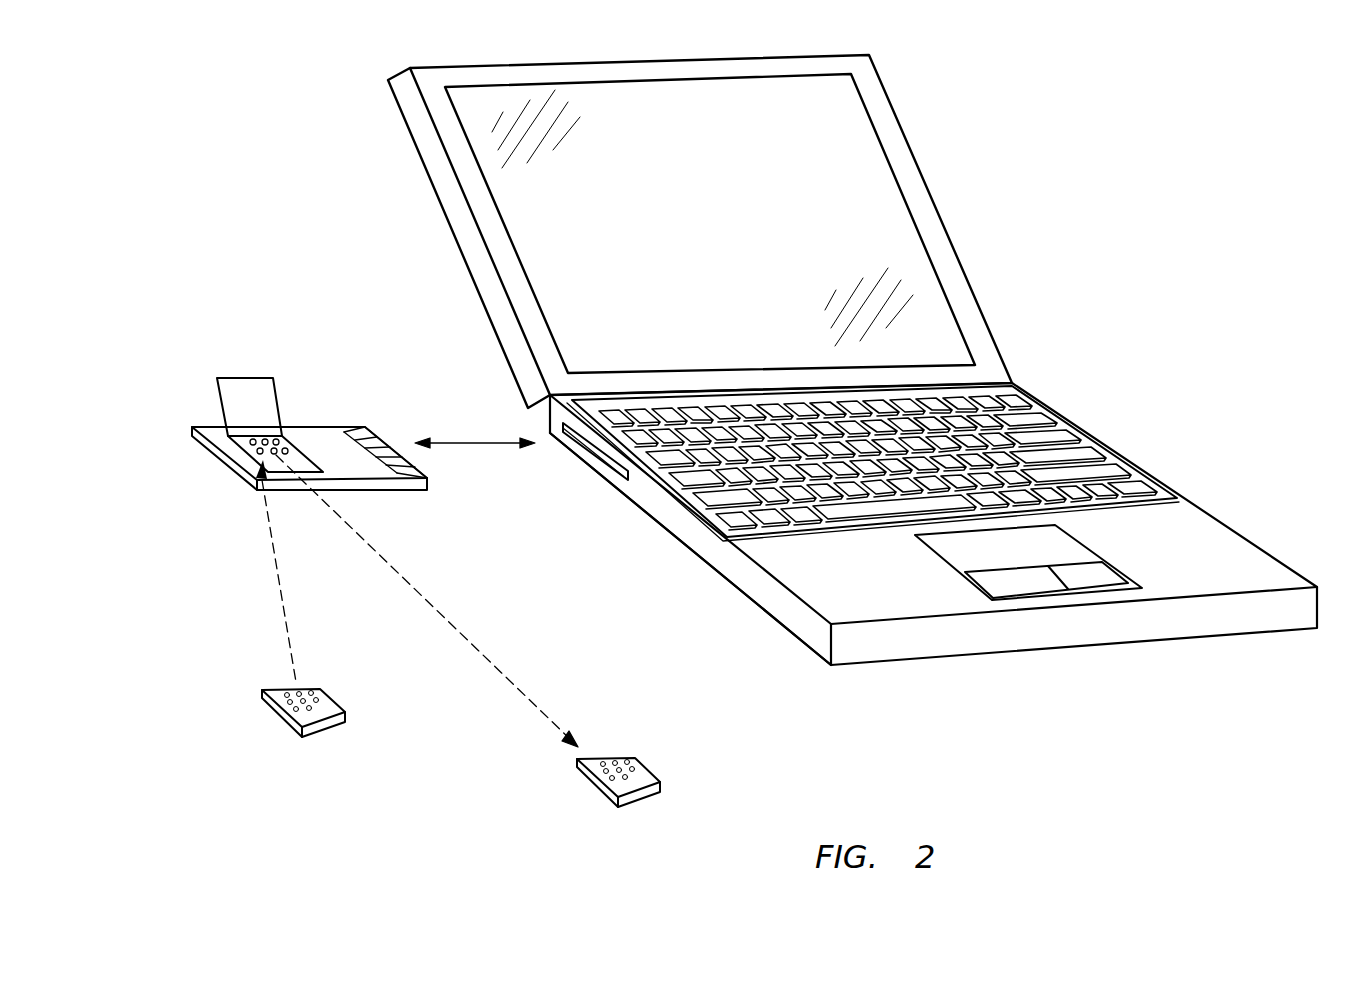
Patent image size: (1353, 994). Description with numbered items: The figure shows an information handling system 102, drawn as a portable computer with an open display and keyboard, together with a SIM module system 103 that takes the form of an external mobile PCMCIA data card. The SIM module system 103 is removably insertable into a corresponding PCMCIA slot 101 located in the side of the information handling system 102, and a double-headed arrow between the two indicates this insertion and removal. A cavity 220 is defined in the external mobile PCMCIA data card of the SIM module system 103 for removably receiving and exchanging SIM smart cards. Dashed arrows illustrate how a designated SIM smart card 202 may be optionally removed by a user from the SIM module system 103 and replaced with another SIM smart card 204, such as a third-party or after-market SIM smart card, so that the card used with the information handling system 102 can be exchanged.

The PCMCIA slot 101 is at (593, 458).
The information handling system 102 is at (1000, 355).
The SIM module system 103 is at (212, 455).
The cavity 220 is at (262, 440).
The designated SIM smart card 202 is at (658, 778).
The another SIM smart card 204 is at (276, 713).